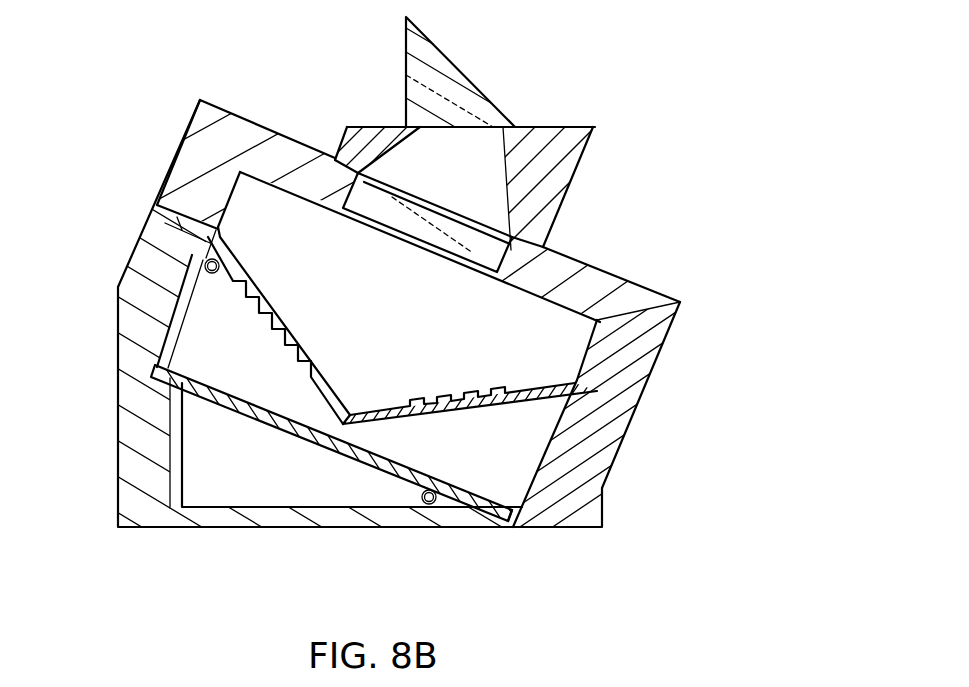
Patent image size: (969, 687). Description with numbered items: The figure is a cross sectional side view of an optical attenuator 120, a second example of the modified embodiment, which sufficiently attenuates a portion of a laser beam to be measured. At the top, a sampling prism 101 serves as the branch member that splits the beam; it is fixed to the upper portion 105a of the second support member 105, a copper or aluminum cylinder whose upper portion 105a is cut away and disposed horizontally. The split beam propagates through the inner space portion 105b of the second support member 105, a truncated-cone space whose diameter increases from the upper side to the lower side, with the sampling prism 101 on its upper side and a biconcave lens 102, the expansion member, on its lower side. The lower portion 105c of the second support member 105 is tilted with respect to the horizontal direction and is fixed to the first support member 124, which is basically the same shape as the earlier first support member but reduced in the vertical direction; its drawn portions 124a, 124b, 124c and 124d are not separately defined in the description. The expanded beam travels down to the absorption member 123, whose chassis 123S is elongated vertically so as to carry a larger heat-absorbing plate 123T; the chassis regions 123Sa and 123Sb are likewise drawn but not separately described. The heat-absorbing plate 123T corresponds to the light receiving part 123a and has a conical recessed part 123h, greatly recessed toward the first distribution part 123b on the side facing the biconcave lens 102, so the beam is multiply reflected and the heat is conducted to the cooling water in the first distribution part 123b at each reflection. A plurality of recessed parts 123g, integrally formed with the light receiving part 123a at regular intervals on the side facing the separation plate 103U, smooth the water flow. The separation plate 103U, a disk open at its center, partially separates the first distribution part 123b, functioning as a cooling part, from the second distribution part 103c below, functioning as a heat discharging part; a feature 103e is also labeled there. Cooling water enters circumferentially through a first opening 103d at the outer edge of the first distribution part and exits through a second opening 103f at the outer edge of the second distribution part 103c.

The optical attenuator 120 is at (54, 36).
The sampling prism 101 is at (484, 100).
The biconcave lens 102 is at (574, 263).
The second support member 105 is at (495, 202).
The upper portion of second support member 105a is at (578, 127).
The inner space portion of second support member 105b is at (550, 170).
The lower portion of second support member 105c is at (340, 172).
The first support member 124 is at (672, 323).
The upper surface of holding member 124a is at (610, 273).
The side surface of holding member 124b is at (623, 313).
The corner portion of holding member 124c is at (158, 204).
The support surface of holding member 124d is at (510, 222).
The absorption member 123 is at (598, 506).
The chassis 123S is at (583, 515).
The toothed surface of lever member 123Sa is at (600, 391).
The inner surface of lever member 123Sb is at (528, 493).
The heat-absorbing plate 123T is at (514, 524).
The light receiving part 123a is at (182, 395).
The first distribution part 123b is at (255, 300).
The recessed part 123g is at (218, 237).
The recessed part 123h is at (253, 277).
The second distribution part 103c is at (375, 490).
The first opening 103d is at (176, 475).
The pivot of pressing member 103e is at (305, 410).
The second opening 103f is at (422, 485).
The separation plate 103U is at (440, 500).